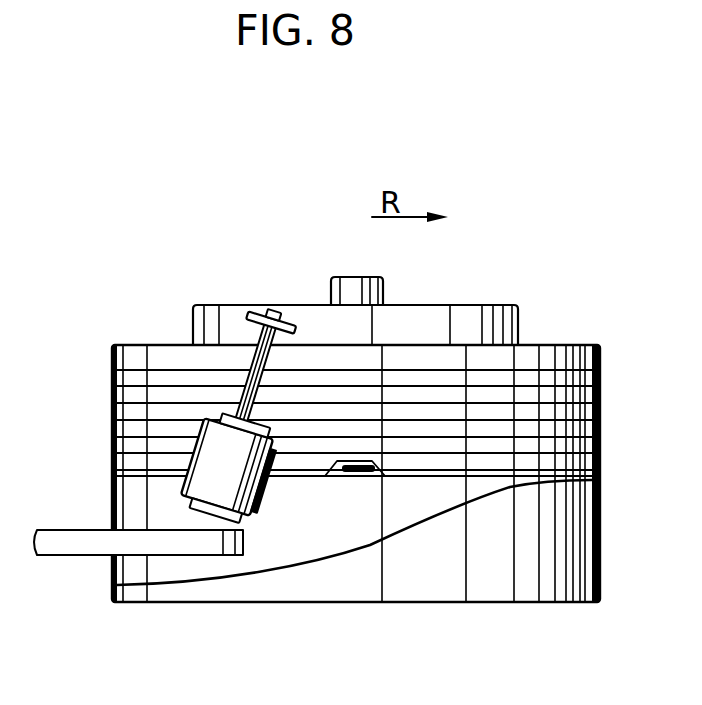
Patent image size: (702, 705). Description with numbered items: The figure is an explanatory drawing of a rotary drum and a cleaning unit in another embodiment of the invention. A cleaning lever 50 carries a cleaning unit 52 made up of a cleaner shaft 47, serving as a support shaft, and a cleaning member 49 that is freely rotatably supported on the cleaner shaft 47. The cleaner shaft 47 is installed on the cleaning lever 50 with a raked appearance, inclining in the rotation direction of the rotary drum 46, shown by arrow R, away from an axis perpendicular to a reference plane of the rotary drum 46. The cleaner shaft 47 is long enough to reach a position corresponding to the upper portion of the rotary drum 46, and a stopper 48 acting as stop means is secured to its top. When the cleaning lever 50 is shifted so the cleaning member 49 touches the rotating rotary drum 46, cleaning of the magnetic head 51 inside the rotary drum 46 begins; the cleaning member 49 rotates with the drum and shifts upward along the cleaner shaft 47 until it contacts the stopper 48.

The rotary drum 46 is at (560, 345).
The cleaner shaft 47 is at (255, 374).
The stopper 48 is at (272, 319).
The cleaning member 49 is at (205, 482).
The cleaning lever 50 is at (73, 542).
The magnetic head 51 is at (357, 474).
The cleaning unit 52 is at (170, 369).